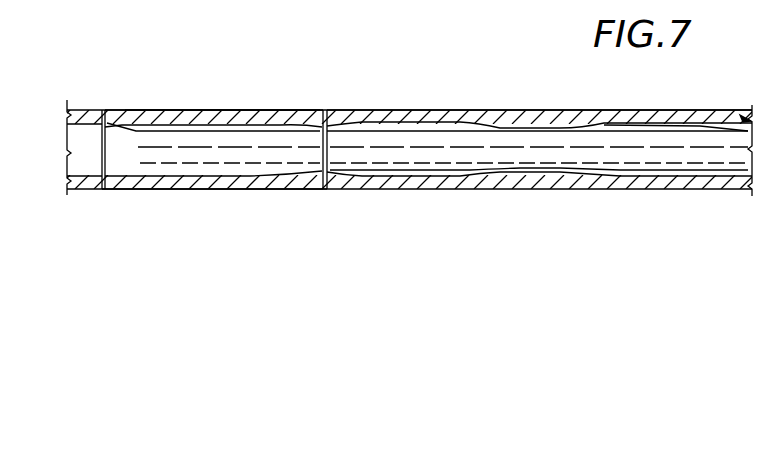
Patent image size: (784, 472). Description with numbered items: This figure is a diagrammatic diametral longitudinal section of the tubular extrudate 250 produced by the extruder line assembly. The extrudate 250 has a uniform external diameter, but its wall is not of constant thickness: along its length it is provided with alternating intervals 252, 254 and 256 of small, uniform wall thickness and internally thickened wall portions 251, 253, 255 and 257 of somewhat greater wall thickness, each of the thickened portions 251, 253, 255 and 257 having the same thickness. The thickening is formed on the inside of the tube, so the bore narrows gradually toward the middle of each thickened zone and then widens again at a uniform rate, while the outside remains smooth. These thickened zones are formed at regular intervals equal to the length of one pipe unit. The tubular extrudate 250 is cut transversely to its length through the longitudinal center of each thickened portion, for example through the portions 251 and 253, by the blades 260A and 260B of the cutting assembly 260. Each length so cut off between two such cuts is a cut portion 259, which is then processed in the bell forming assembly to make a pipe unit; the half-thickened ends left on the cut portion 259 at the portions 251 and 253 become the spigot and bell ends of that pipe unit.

The tubular extrudate 250 is at (753, 70).
The internally thickened wall portion 251 is at (110, 148).
The interval of small uniform wall thickness 252 is at (213, 110).
The internally thickened wall portion 253 is at (350, 122).
The interval of small uniform wall thickness 254 is at (423, 115).
The internally thickened wall portion 255 is at (535, 120).
The interval of small uniform wall thickness 256 is at (660, 118).
The internally thickened wall portion 257 is at (746, 116).
The cut portion 259 is at (232, 148).
The cutting assembly 260 is at (362, 250).
The blade 260A is at (323, 189).
The blade 260B is at (102, 189).